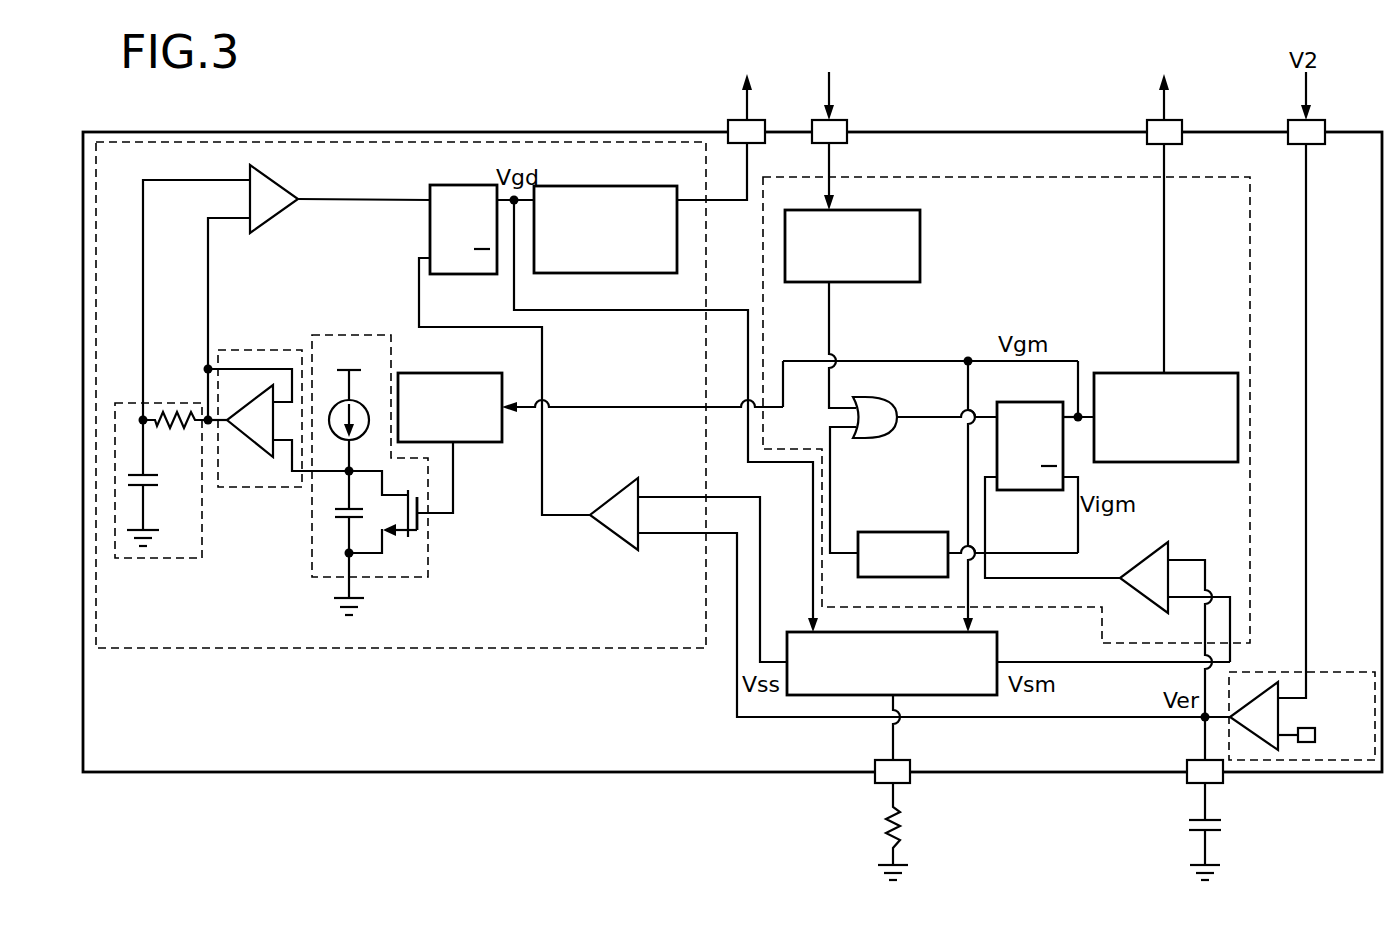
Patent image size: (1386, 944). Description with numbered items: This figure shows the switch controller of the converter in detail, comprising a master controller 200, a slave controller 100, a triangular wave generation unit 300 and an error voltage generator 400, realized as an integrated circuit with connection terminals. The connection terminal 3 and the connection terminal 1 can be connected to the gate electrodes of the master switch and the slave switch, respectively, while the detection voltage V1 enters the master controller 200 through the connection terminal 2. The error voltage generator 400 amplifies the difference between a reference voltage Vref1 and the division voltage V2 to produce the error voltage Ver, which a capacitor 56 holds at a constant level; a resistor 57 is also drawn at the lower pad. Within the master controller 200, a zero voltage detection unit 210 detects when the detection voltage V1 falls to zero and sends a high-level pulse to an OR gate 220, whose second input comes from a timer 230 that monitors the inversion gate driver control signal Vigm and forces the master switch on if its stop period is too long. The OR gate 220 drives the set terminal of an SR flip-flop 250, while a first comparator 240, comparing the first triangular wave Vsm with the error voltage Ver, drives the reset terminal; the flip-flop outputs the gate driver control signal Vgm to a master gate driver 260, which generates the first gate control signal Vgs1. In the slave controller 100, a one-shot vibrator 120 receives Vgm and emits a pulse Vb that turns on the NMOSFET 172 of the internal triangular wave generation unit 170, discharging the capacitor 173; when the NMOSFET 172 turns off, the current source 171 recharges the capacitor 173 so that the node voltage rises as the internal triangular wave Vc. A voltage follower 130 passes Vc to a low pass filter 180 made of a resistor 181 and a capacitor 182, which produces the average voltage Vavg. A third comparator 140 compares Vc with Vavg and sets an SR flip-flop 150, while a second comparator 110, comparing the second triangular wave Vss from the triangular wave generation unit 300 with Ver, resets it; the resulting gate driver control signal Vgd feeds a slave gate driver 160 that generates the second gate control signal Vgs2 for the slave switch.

The connection terminal 1 is at (737, 119).
The connection terminal 2 is at (840, 119).
The connection terminal 3 is at (1172, 119).
The capacitor 56 is at (1221, 797).
The resistor 57 is at (903, 787).
The slave controller 100 is at (450, 649).
The second comparator 110 is at (613, 551).
The one-shot vibrator 120 is at (475, 373).
The voltage follower 130 is at (268, 488).
The third comparator 140 is at (278, 233).
The SR flip-flop 150 is at (430, 240).
The slave gate driver 160 is at (623, 186).
The internal triangular wave generation unit 170 is at (407, 476).
The current source 171 is at (362, 437).
The NMOSFET 172 is at (424, 526).
The capacitor 173 is at (338, 512).
The low pass filter 180 is at (163, 508).
The resistor 181 is at (175, 433).
The capacitor 182 is at (165, 483).
The master controller 200 is at (1250, 338).
The zero voltage detection unit 210 is at (920, 241).
The OR gate 220 is at (870, 439).
The timer 230 is at (920, 532).
The first comparator 240 is at (1148, 562).
The SR flip-flop 250 is at (1030, 491).
The master gate driver 260 is at (1195, 463).
The triangular wave generation unit 300 is at (960, 696).
The error voltage generator 400 is at (1342, 671).